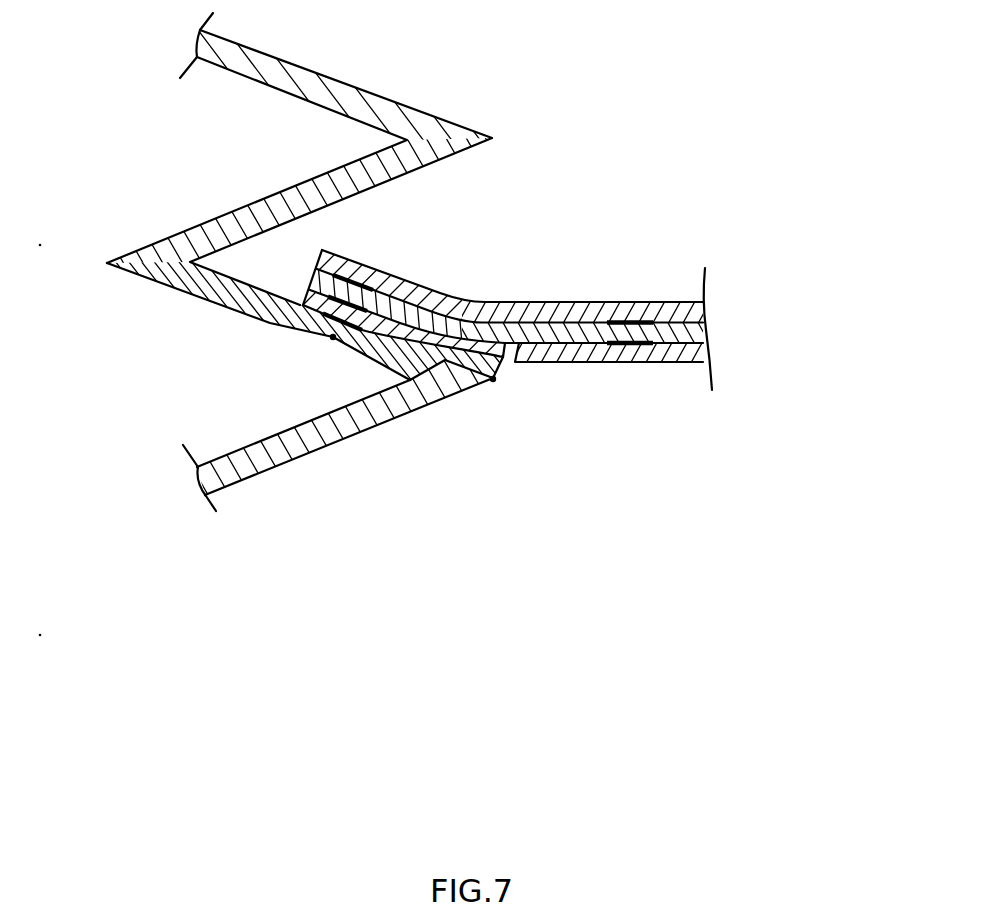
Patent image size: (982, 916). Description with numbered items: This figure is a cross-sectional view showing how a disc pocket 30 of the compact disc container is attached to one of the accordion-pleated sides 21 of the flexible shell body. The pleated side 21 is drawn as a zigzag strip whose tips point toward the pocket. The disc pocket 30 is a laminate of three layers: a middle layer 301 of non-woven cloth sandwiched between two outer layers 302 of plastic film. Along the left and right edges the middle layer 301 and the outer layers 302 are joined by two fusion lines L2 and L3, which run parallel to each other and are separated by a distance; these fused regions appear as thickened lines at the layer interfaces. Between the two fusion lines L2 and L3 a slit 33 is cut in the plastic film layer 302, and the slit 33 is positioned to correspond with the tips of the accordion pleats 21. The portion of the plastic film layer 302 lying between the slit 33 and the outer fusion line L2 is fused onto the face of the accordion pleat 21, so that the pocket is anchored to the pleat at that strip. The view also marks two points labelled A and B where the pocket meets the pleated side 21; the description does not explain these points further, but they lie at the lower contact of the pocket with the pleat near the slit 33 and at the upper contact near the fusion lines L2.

The pleated side 21 is at (158, 212).
The disc pocket 30 is at (567, 322).
The middle layer 301 is at (697, 331).
The outer layer 302 is at (697, 312).
The fusion line L2 is at (340, 268).
The fusion line L3 is at (636, 302).
The contact point A is at (493, 380).
The contact point B is at (333, 337).
The slit 33 is at (504, 364).